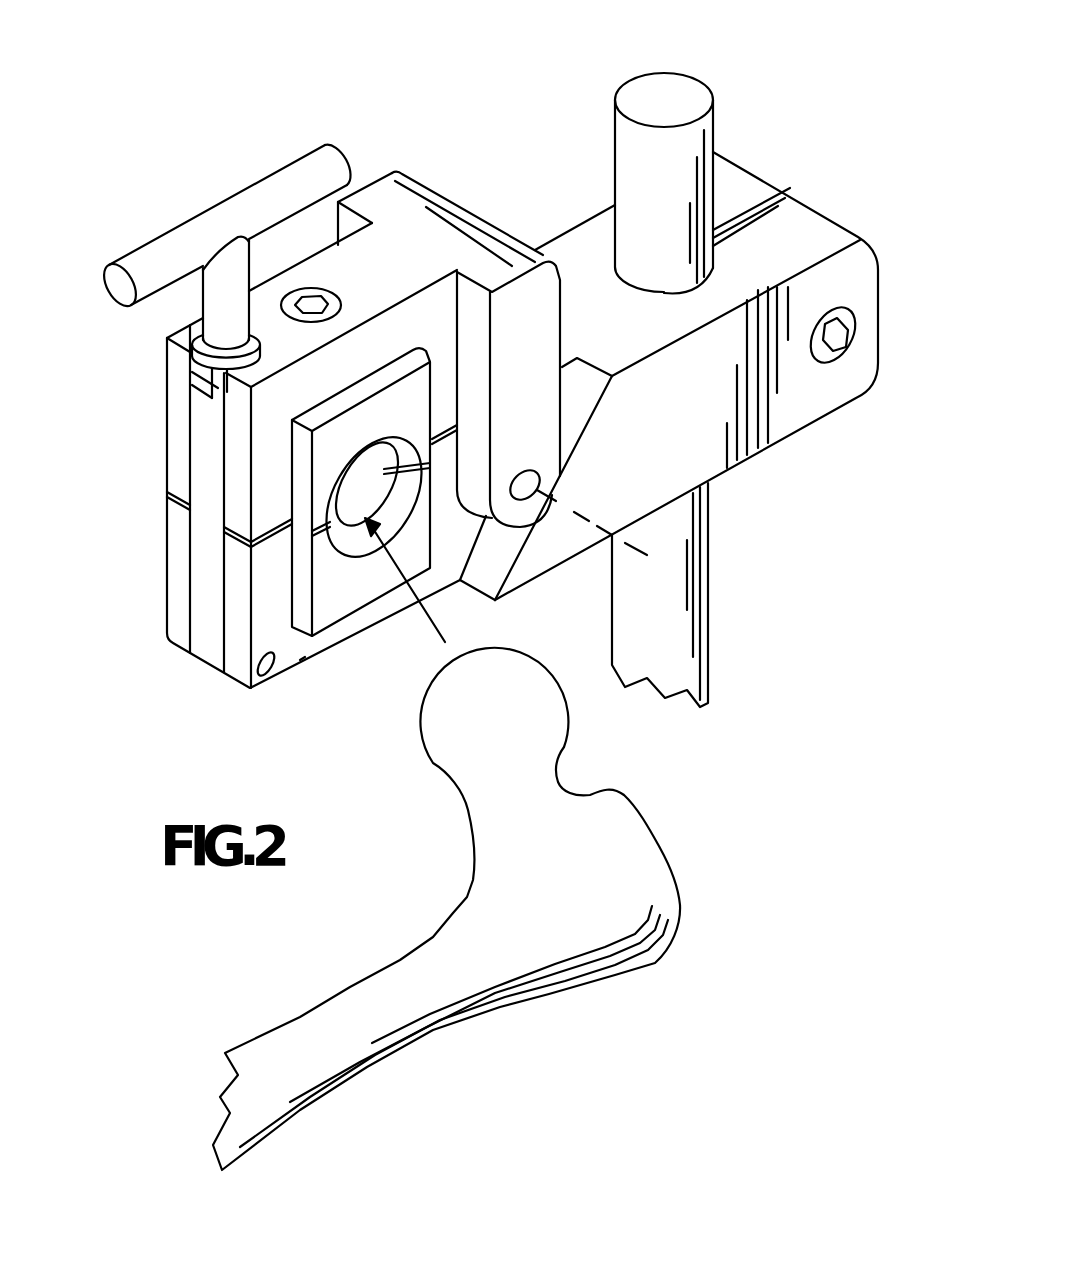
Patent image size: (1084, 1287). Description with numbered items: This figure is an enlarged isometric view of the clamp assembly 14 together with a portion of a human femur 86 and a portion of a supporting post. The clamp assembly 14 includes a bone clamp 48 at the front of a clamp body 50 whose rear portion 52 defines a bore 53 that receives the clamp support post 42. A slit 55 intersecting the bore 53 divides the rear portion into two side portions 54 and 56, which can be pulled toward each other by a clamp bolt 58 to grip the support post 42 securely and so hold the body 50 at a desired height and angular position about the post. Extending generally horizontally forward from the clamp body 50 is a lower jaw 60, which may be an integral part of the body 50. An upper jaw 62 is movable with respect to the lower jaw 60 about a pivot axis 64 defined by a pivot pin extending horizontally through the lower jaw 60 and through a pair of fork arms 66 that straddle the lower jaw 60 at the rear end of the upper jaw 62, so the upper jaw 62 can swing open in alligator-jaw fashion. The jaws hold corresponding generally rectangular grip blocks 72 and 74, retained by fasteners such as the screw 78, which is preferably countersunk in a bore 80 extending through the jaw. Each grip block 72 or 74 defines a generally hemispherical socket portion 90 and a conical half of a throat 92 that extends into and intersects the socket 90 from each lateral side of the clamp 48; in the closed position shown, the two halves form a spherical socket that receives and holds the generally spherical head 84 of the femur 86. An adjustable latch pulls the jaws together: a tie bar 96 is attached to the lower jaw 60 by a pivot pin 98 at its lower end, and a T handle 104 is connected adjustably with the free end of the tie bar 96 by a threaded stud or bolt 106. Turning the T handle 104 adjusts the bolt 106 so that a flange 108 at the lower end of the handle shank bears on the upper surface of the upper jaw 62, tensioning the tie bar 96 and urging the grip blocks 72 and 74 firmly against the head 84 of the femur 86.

The clamp assembly 14 is at (826, 134).
The clamp support post 42 is at (661, 82).
The bone clamp 48 is at (165, 604).
The clamp body 50 is at (552, 550).
The rear portion 52 is at (800, 408).
The bore 53 is at (712, 278).
The side portion 54 is at (723, 178).
The slit 55 is at (752, 208).
The side portion 56 is at (812, 226).
The clamp bolt 58 is at (855, 340).
The lower jaw 60 is at (300, 660).
The upper jaw 62 is at (175, 444).
The pivot axis 64 is at (573, 513).
The fork arms 66 is at (548, 322).
The grip block 72 is at (362, 594).
The grip block 74 is at (397, 376).
The screw 78 is at (332, 305).
The bore 80 is at (310, 297).
The head of femur 84 is at (580, 714).
The femur 86 is at (488, 1030).
The socket 90 is at (365, 470).
The throat 92 is at (384, 513).
The tie bar 96 is at (200, 550).
The pivot pin 98 is at (263, 675).
The T handle 104 is at (162, 240).
The threaded stud or bolt 106 is at (205, 392).
The flange 108 is at (192, 338).